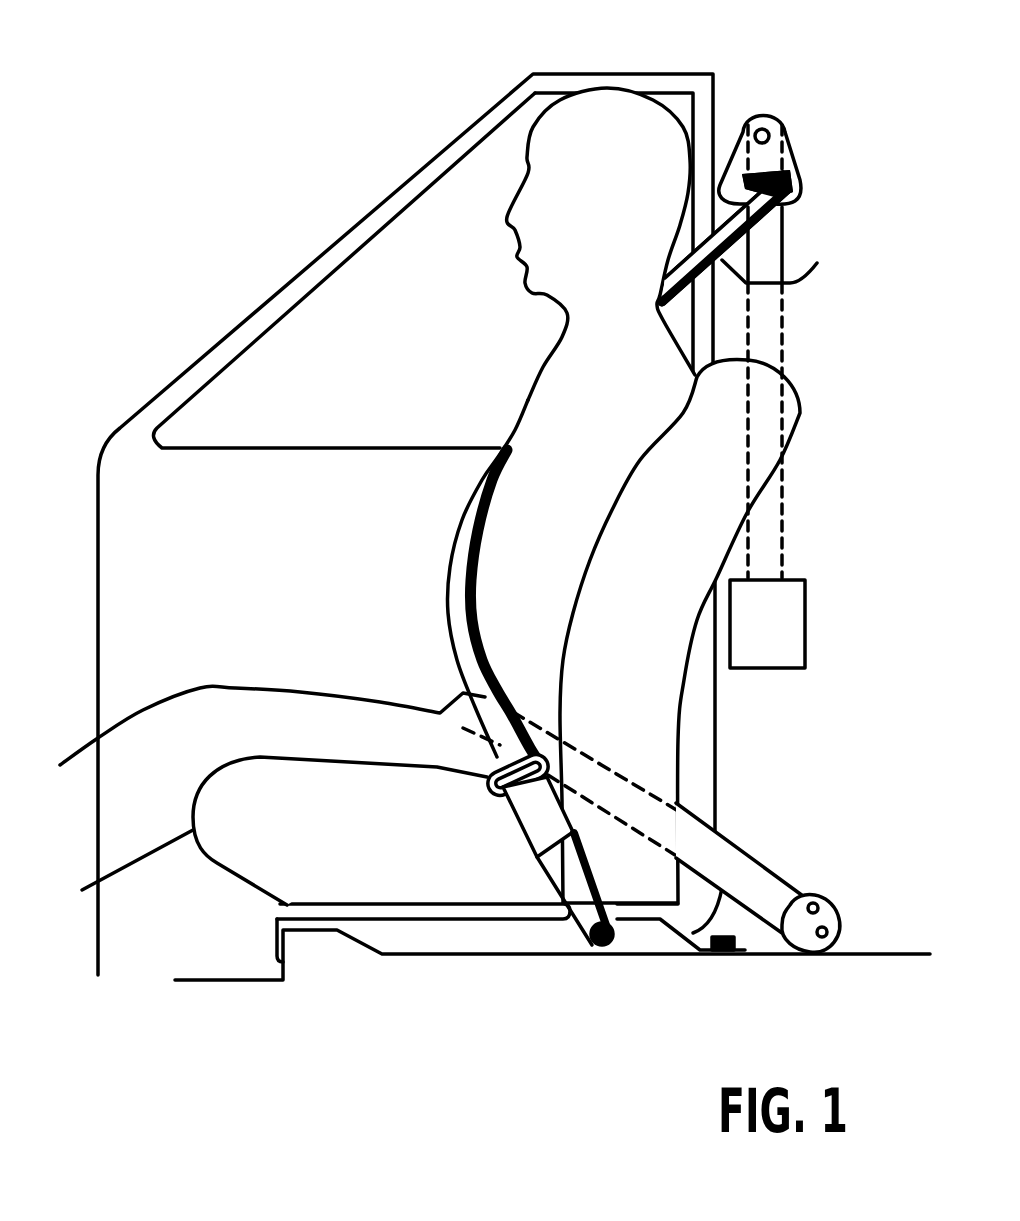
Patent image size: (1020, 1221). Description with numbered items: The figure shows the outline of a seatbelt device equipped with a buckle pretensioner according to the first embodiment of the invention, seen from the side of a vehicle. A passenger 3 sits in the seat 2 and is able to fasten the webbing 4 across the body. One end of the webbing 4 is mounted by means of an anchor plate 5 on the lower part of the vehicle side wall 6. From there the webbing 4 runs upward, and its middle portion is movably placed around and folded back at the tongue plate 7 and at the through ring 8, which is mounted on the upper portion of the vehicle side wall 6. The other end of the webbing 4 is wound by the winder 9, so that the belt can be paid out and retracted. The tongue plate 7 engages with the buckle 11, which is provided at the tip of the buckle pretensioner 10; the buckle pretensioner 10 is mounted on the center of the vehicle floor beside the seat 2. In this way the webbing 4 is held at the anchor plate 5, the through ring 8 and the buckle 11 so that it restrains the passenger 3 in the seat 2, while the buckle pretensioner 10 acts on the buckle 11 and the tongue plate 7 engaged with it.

The seat 2 is at (657, 771).
The passenger 3 is at (515, 418).
The webbing 4 is at (447, 601).
The anchor plate 5 is at (833, 917).
The vehicle side wall 6 is at (810, 207).
The tongue plate 7 is at (490, 793).
The through ring 8 is at (780, 117).
The winder 9 is at (805, 632).
The buckle pretensioner 10 is at (583, 900).
The buckle 11 is at (535, 830).